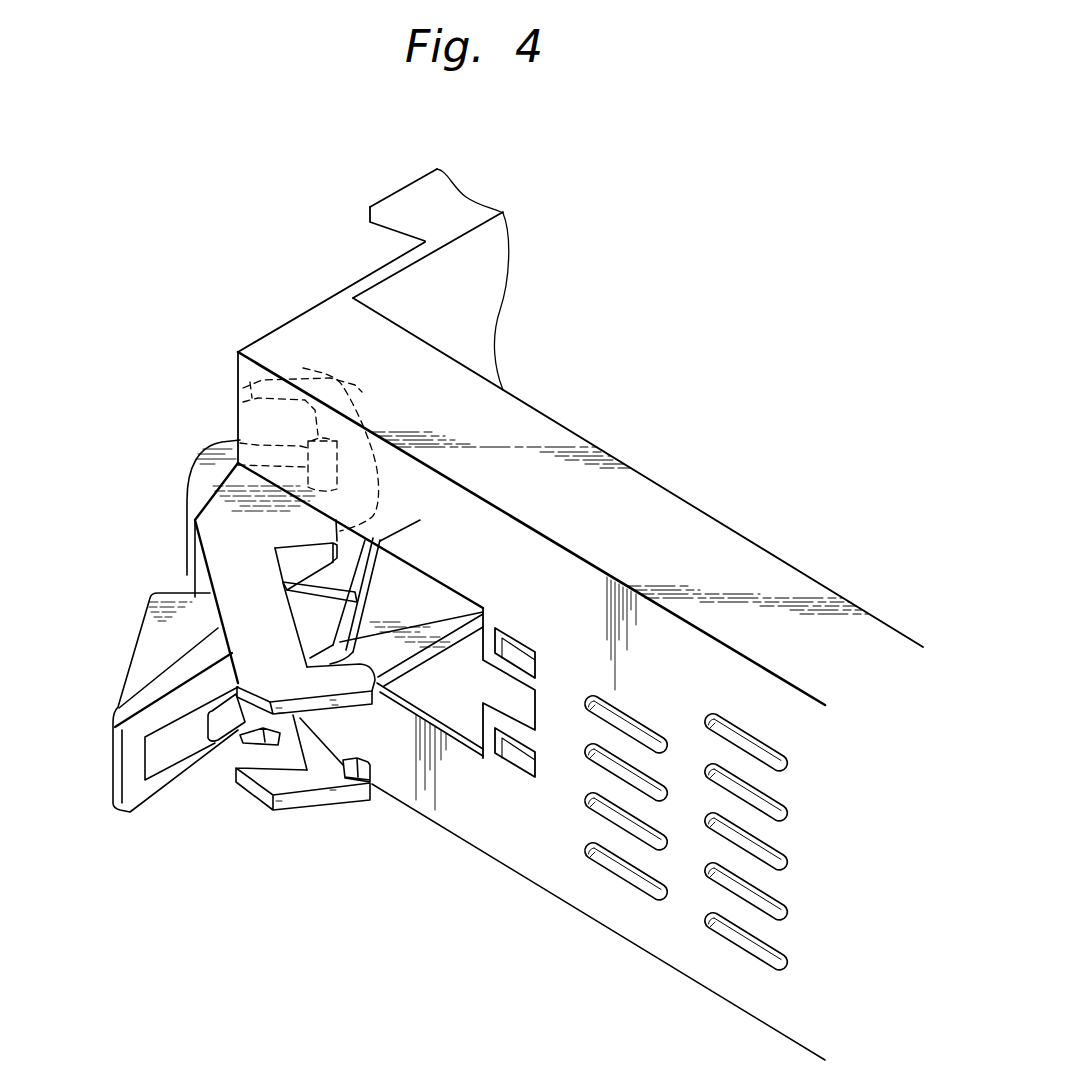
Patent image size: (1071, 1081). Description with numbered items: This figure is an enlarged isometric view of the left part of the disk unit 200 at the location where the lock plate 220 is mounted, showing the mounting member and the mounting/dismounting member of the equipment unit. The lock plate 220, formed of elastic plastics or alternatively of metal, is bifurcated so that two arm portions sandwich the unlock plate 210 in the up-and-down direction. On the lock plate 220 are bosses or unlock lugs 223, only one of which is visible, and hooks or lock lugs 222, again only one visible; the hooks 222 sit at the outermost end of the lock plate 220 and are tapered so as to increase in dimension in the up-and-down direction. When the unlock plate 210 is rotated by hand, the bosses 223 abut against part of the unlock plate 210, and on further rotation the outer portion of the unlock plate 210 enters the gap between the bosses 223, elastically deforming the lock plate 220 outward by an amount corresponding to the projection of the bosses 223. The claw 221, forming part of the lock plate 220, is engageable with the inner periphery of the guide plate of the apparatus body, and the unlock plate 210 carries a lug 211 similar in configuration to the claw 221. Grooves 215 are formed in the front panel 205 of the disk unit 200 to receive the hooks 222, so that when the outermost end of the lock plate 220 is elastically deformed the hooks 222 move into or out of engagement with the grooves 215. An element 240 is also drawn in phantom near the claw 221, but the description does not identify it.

The disk unit 200 is at (635, 487).
The front panel 205 is at (770, 563).
The unlock plate 210 is at (122, 768).
The lug 211 is at (203, 473).
The grooves 215 is at (528, 775).
The lock plate 220 is at (210, 538).
The claw 221 is at (240, 372).
The hooks 222 is at (337, 788).
The bosses 223 is at (245, 745).
The phantom component 240 is at (303, 368).